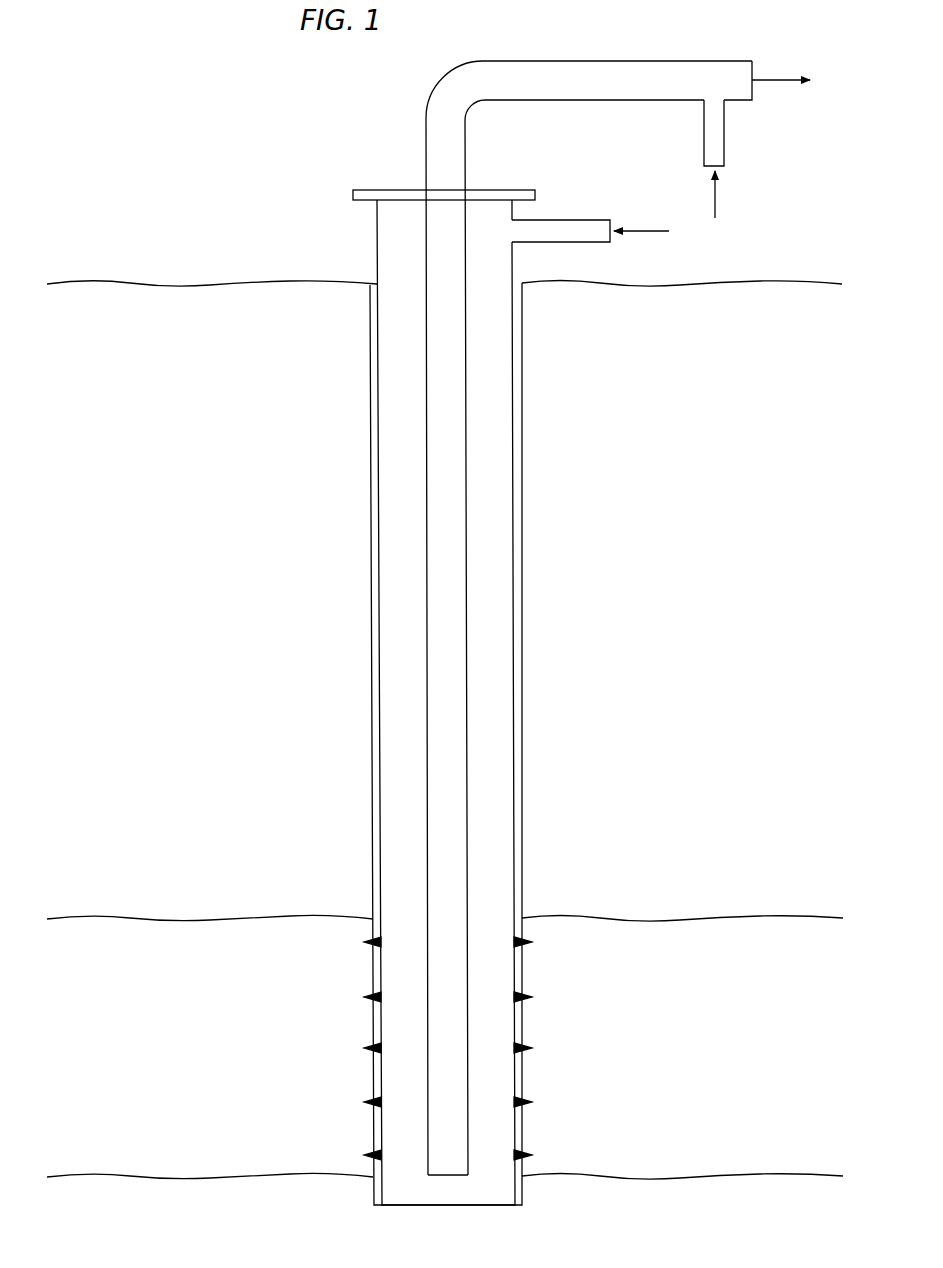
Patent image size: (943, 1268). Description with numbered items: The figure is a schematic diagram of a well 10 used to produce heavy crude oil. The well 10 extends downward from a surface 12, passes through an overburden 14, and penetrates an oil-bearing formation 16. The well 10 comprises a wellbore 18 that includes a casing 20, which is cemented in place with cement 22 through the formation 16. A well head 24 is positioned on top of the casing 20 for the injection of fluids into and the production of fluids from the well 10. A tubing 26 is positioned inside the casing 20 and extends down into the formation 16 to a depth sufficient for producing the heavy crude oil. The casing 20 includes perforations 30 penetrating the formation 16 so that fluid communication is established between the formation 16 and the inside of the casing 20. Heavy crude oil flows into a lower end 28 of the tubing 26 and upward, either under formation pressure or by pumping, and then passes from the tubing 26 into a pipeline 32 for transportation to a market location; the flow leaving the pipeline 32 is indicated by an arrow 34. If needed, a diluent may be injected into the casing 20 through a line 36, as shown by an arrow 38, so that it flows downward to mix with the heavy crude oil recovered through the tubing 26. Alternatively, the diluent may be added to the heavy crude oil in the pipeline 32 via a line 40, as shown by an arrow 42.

The well 10 is at (538, 176).
The surface 12 is at (750, 282).
The overburden 14 is at (672, 551).
The oil-bearing formation 16 is at (673, 1048).
The wellbore 18 is at (522, 547).
The casing 20 is at (513, 610).
The cement 22 is at (519, 729).
The well head 24 is at (403, 190).
The tubing 26 is at (465, 468).
The lower end 28 is at (468, 1148).
The perforations 30 is at (532, 997).
The pipeline 32 is at (633, 62).
The production flow arrow 34 is at (773, 82).
The line 36 is at (565, 222).
The arrow 38 is at (640, 230).
The line 40 is at (705, 130).
The arrow 42 is at (716, 205).